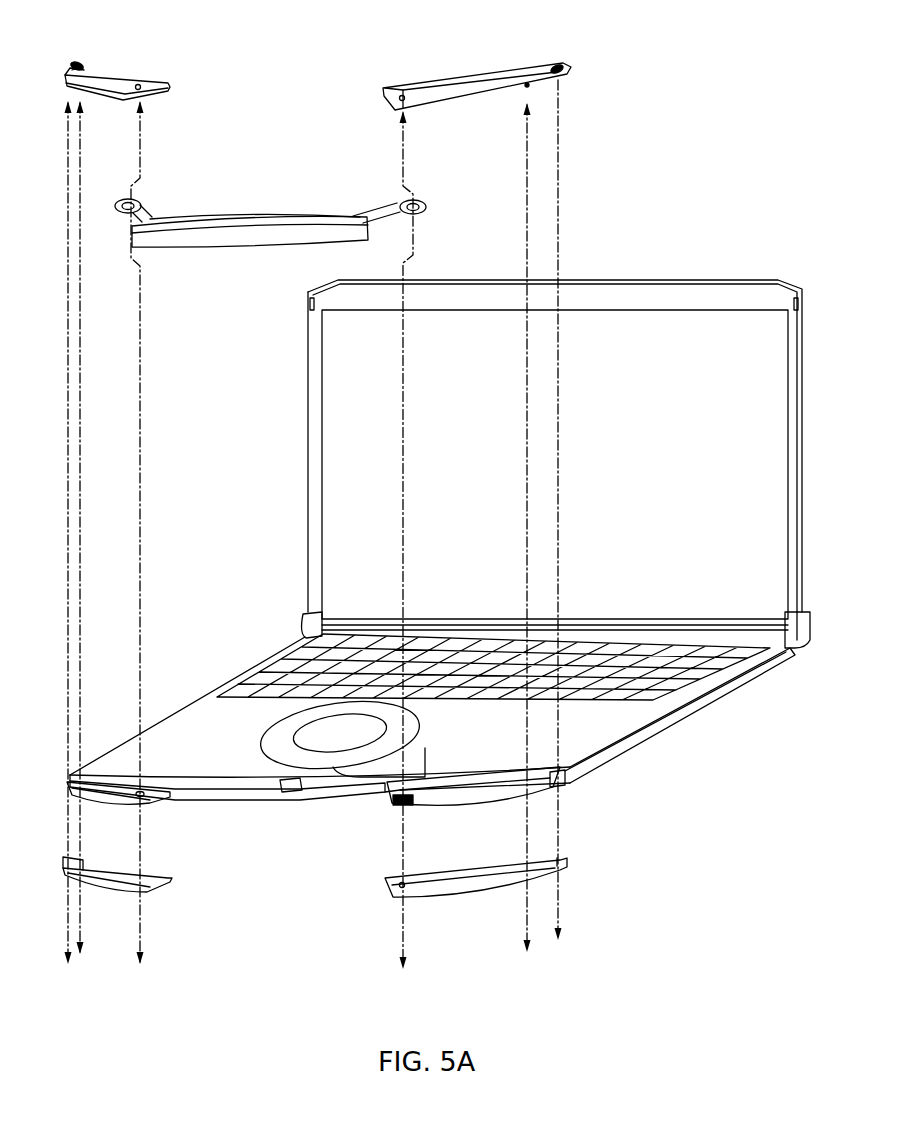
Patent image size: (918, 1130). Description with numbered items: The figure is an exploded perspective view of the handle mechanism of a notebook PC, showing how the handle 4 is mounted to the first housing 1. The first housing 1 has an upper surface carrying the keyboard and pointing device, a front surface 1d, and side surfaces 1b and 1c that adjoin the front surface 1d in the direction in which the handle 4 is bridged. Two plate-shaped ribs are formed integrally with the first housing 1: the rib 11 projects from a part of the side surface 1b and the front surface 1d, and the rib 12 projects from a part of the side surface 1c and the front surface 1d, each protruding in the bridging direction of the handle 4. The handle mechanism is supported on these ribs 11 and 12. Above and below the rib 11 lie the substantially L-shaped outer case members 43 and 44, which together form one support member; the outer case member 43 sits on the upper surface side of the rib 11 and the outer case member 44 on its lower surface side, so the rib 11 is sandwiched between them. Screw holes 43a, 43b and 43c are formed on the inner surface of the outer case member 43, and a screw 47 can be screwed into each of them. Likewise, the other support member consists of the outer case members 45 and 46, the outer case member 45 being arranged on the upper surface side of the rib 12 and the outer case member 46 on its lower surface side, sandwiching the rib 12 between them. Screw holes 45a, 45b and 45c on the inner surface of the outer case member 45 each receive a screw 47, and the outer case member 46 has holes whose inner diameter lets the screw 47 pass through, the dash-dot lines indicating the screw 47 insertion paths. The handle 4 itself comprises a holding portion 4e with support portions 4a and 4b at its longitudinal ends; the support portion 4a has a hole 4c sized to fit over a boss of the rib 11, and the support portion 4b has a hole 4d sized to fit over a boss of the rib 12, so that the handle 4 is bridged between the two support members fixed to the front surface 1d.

The first housing 1 is at (440, 578).
The side surface 1b is at (203, 690).
The side surface 1c is at (690, 710).
The front surface 1d is at (232, 802).
The handle 4 is at (270, 228).
The support portion 4a is at (150, 215).
The support portion 4b is at (363, 215).
The hole 4c is at (135, 202).
The hole 4d is at (407, 203).
The holding portion 4e is at (255, 225).
The rib 11 is at (92, 803).
The rib 12 is at (470, 810).
The outer case member 43 is at (124, 55).
The screw hole 43a is at (141, 82).
The screw hole 43b is at (65, 60).
The screw hole 43c is at (88, 60).
The outer case member 44 is at (172, 893).
The outer case member 45 is at (475, 60).
The screw hole 45a is at (400, 90).
The screw hole 45b is at (527, 82).
The screw hole 45c is at (557, 63).
The outer case member 46 is at (387, 892).
The screw 47 is at (140, 970).